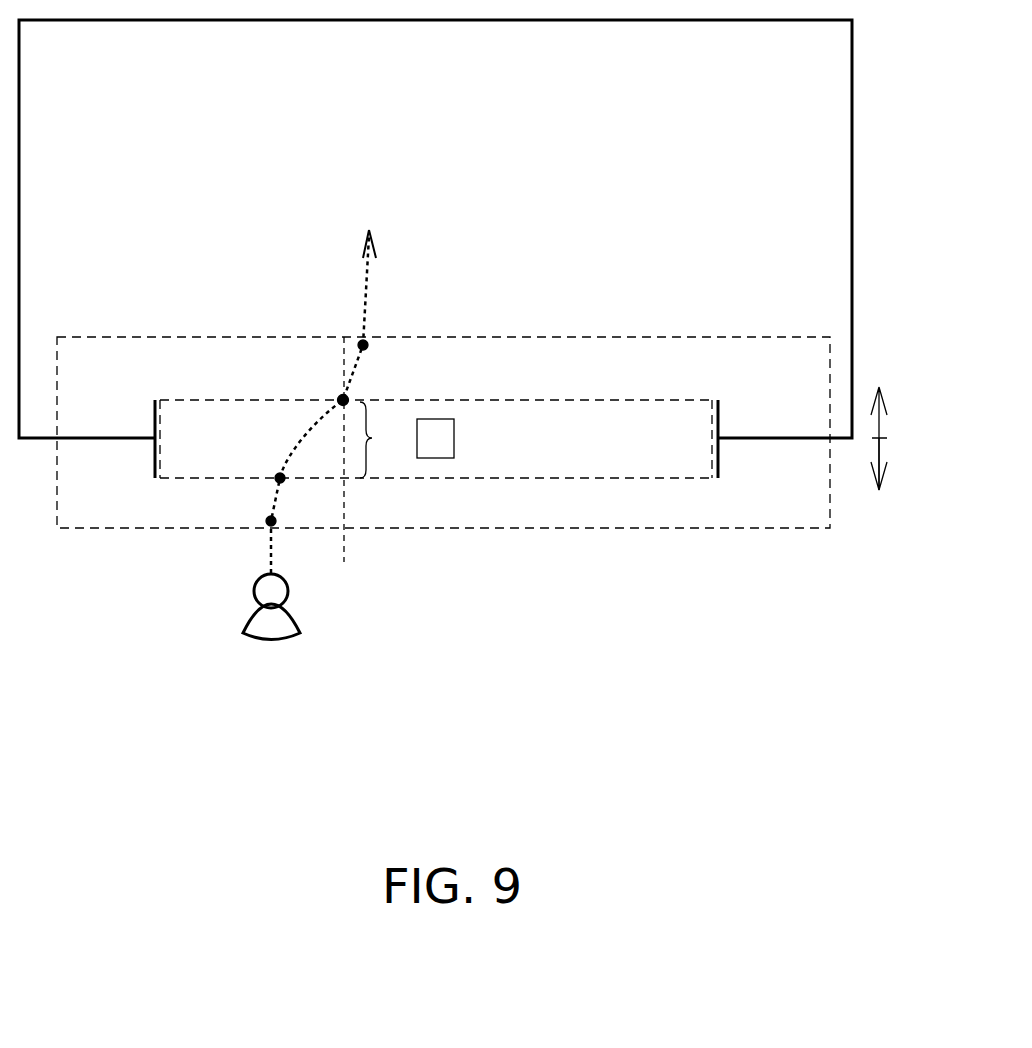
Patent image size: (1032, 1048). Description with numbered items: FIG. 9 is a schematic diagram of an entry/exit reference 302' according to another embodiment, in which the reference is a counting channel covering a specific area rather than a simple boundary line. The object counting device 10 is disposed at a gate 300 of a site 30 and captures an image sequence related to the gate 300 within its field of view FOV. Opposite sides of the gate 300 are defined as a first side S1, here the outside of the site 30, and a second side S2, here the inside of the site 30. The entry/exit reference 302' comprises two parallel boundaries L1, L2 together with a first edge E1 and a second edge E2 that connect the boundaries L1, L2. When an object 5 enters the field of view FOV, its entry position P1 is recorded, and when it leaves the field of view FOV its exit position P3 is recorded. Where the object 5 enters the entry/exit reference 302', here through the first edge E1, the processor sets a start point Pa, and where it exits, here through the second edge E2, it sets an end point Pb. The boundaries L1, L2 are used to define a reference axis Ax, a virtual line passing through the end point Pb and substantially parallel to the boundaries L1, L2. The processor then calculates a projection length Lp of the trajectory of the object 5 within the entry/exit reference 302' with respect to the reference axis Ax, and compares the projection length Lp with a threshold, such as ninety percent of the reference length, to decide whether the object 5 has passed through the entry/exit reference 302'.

The site 30 is at (852, 230).
The object 5 is at (257, 618).
The object counting device 10 is at (437, 419).
The gate 300 is at (436, 441).
The entry/exit reference 302' is at (436, 441).
The field of view FOV is at (243, 337).
The boundary L1 is at (160, 420).
The boundary L2 is at (712, 420).
The first edge E1 is at (508, 478).
The second edge E2 is at (510, 400).
The start point Pa is at (278, 480).
The end point Pb is at (343, 398).
The entry position P1 is at (295, 512).
The exit position P3 is at (383, 357).
The projection length Lp is at (383, 440).
The reference axis Ax is at (343, 467).
The first side S1 is at (903, 469).
The second side S2 is at (899, 438).